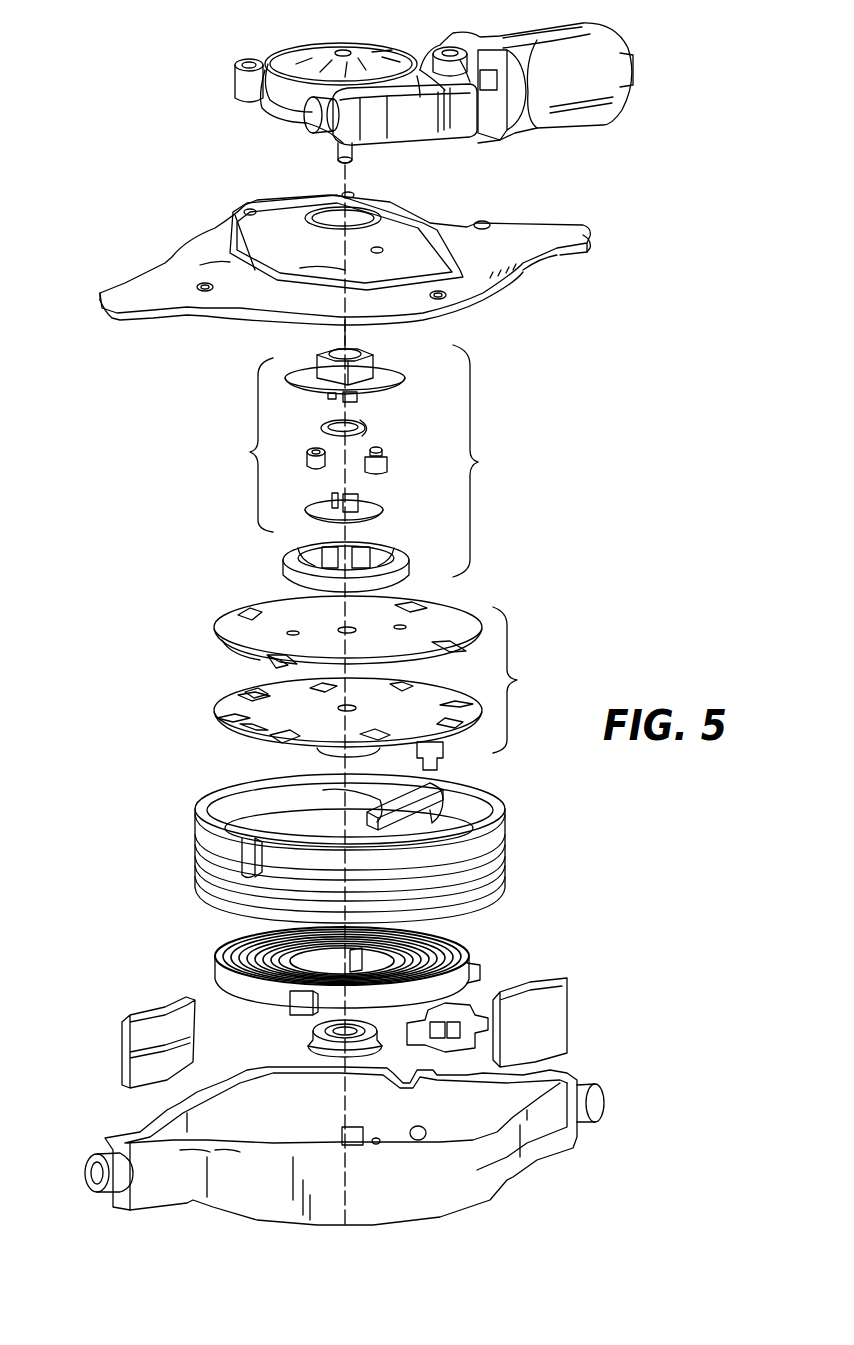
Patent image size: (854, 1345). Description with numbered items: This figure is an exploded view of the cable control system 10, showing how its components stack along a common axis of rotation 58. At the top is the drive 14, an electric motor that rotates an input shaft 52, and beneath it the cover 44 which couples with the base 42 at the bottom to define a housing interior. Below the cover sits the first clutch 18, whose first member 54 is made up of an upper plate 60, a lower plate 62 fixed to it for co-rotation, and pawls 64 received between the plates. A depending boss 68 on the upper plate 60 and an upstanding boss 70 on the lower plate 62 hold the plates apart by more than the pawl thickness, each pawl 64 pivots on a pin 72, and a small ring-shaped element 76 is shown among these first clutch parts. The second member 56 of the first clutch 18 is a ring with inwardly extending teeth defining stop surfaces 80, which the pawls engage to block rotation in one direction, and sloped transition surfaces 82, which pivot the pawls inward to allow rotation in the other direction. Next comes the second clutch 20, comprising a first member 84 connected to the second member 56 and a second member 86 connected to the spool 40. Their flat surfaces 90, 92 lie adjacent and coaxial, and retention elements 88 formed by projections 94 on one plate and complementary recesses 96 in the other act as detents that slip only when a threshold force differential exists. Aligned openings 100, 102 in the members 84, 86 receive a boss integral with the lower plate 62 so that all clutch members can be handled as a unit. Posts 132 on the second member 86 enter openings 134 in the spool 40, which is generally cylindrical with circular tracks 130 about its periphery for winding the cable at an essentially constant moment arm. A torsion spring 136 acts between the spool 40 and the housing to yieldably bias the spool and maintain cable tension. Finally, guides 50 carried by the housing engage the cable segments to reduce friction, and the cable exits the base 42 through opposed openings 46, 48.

The cable control system 10 is at (127, 108).
The drive 14 is at (628, 30).
The input shaft 52 is at (355, 152).
The cover 44 is at (490, 250).
The axis of rotation 58 is at (345, 330).
The upper plate 60 is at (385, 366).
The depending boss 68 is at (356, 400).
The ring 76 is at (326, 426).
The pin 72 is at (380, 454).
The pawl 64 is at (311, 466).
The upstanding boss 70 is at (355, 494).
The lower plate 62 is at (385, 510).
The first member 54 is at (248, 445).
The first clutch 18 is at (482, 461).
The second member 56 is at (290, 568).
The stop surfaces 80 is at (314, 555).
The transition surfaces 82 is at (366, 546).
The first member 84 is at (214, 632).
The second member 86 is at (214, 719).
The retention elements 88 is at (264, 667).
The flat surface 90 is at (224, 646).
The flat surface 92 is at (252, 733).
The projections 94 is at (456, 655).
The recesses 96 is at (230, 720).
The opening 100 is at (354, 632).
The opening 102 is at (354, 708).
The second clutch 20 is at (519, 680).
The posts 132 is at (440, 750).
The openings 134 is at (337, 836).
The tracks 130 is at (196, 831).
The spool 40 is at (520, 847).
The torsion spring 136 is at (478, 951).
The guides 50 is at (555, 1003).
The base 42 is at (550, 1135).
The opening 46 is at (95, 1175).
The opening 48 is at (595, 1105).